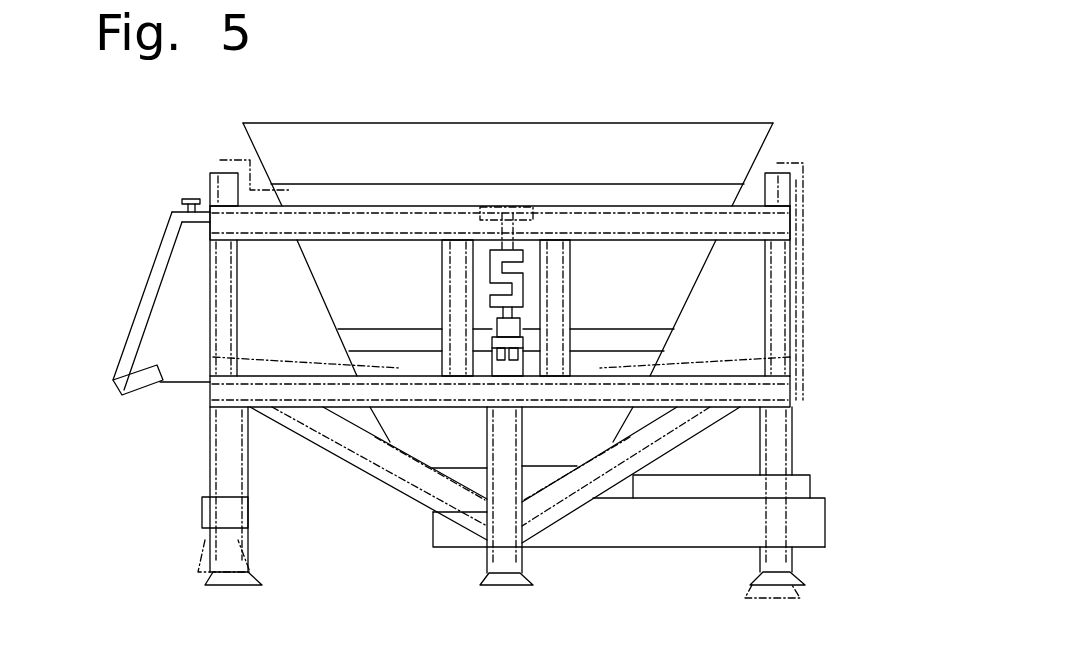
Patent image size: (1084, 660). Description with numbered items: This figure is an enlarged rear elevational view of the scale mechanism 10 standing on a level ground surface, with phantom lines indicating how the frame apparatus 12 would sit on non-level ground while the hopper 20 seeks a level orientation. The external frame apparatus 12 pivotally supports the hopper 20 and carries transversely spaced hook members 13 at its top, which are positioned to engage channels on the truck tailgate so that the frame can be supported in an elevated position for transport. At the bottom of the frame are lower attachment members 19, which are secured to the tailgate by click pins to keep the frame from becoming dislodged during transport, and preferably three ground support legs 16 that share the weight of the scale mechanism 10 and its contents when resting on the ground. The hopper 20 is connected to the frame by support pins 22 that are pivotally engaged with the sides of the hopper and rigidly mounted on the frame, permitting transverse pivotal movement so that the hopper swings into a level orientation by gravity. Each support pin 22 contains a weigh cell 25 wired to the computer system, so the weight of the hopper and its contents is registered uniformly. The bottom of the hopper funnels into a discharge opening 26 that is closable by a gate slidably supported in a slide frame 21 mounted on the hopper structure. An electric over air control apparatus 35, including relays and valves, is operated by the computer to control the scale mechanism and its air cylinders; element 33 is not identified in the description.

The scale mechanism 10 is at (568, 84).
The frame apparatus 12 is at (790, 340).
The hook members 13 is at (210, 177).
The ground support legs 16 is at (248, 553).
The lower attachment members 19 is at (204, 517).
The hopper 20 is at (752, 122).
The slide frame 21 is at (825, 532).
The support pins 22 is at (490, 312).
The weigh cell 25 is at (523, 268).
The discharge opening 26 is at (451, 565).
The knob 33 is at (182, 203).
The electric over air control apparatus 35 is at (144, 267).